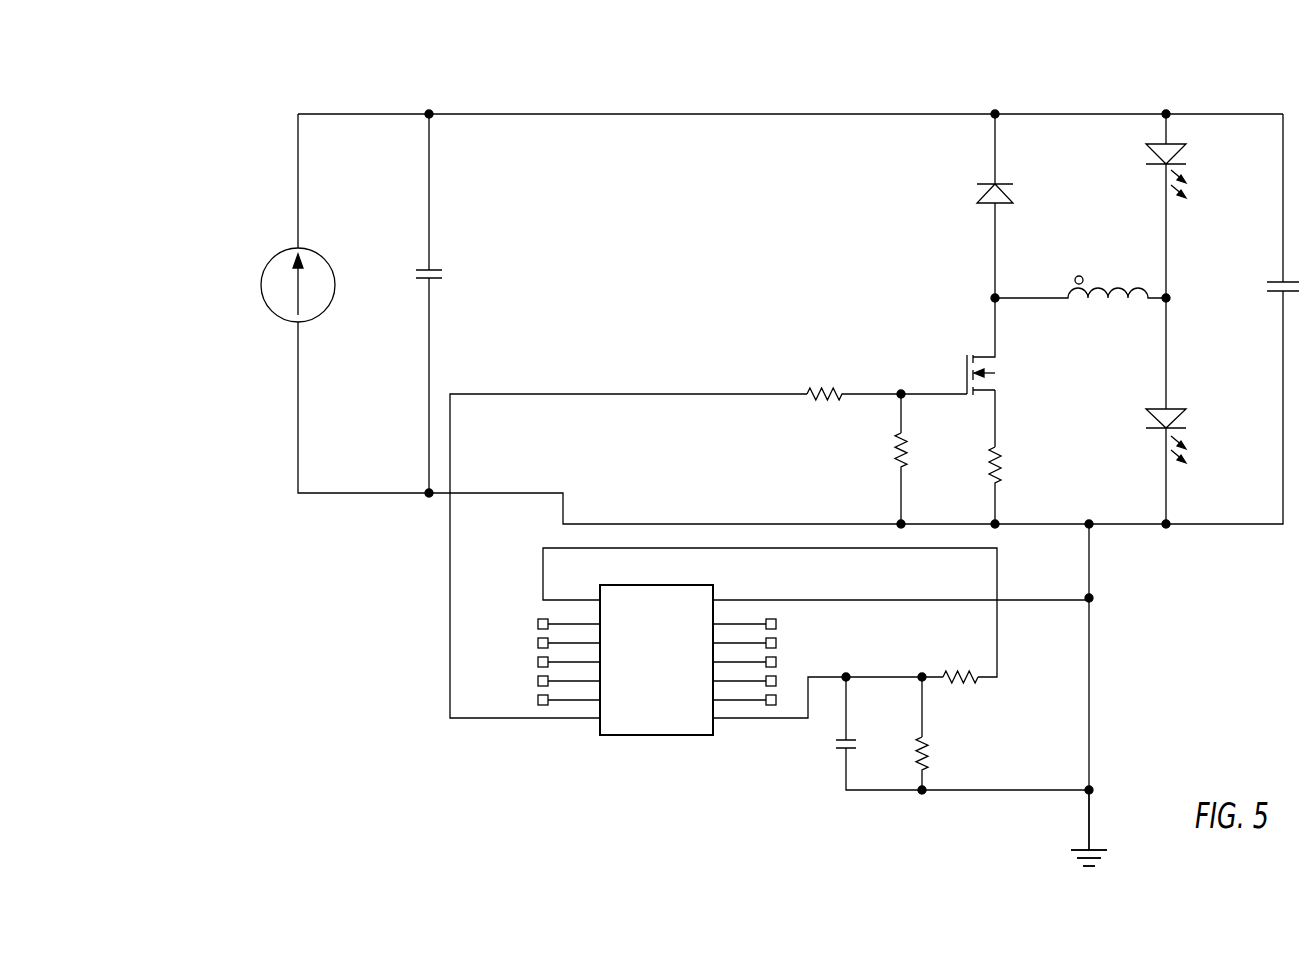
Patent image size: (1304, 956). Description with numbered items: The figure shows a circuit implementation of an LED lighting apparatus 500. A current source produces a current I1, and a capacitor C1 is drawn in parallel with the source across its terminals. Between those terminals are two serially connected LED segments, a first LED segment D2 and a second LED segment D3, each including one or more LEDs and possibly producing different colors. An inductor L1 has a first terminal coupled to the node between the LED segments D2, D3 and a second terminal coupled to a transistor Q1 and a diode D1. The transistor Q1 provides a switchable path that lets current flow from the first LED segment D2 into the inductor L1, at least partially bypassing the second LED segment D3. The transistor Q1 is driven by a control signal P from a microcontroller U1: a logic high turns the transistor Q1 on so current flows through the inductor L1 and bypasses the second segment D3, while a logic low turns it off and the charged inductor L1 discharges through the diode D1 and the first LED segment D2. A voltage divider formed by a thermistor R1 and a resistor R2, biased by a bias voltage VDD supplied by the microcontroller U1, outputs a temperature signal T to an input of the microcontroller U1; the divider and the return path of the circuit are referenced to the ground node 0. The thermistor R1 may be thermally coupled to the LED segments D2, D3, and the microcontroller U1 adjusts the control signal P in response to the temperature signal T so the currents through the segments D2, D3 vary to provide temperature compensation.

The lighting apparatus 500 is at (279, 82).
The current I1 is at (309, 285).
The input capacitor C1 is at (441, 303).
The diode D1 is at (1009, 206).
The inductor L1 is at (1080, 275).
The transistor Q1 is at (998, 346).
The first LED segment D2 is at (1180, 206).
The second LED segment D3 is at (1180, 411).
The control signal P is at (628, 542).
The microcontroller U1 is at (657, 645).
The bias voltage VDD is at (770, 612).
The temperature signal T is at (817, 680).
The thermistor R1 is at (950, 663).
The resistor R2 is at (937, 733).
The ground 0 is at (1096, 835).